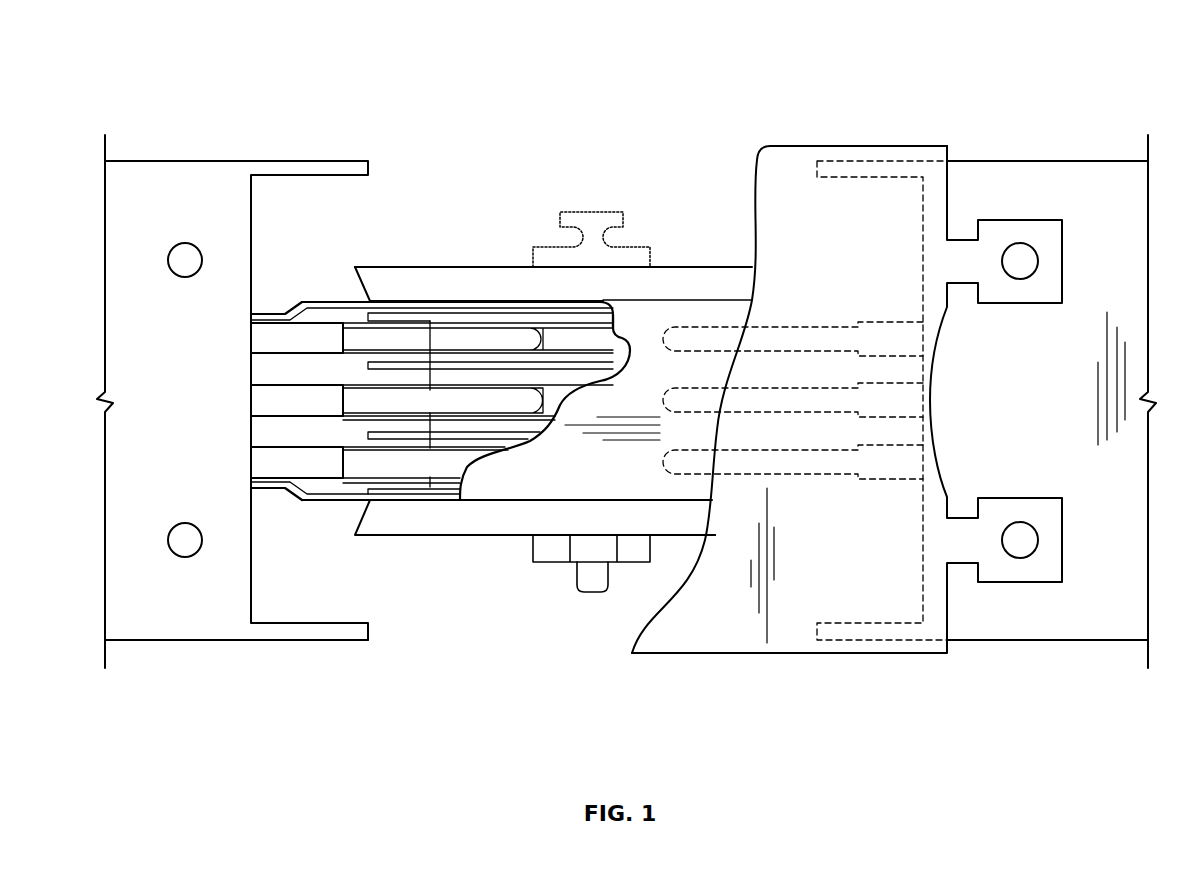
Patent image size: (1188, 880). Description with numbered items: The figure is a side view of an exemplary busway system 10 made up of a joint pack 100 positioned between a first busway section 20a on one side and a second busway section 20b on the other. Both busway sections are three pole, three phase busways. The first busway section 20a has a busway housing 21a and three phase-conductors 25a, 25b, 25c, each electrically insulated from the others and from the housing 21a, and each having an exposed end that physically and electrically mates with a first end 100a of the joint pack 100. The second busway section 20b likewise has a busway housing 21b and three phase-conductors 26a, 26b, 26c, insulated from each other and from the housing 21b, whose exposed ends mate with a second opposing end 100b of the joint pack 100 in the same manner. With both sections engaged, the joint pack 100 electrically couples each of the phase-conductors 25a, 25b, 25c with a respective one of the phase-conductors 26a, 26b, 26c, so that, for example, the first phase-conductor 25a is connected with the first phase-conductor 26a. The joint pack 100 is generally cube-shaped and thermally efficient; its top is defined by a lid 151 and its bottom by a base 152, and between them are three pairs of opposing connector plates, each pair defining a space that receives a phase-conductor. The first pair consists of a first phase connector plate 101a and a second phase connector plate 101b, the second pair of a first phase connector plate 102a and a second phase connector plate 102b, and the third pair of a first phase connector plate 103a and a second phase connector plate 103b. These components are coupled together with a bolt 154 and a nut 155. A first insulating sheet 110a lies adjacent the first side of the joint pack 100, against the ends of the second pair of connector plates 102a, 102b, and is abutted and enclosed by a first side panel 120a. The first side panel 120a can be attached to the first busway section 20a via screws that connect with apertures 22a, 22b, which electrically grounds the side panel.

The busway system 10 is at (410, 54).
The first busway section 20a is at (197, 140).
The second busway section 20b is at (1032, 140).
The busway housing 21a is at (178, 630).
The busway housing 21b is at (1050, 636).
The aperture 22a is at (170, 262).
The aperture 22b is at (170, 541).
The first phase-conductor 25a is at (362, 338).
The phase-conductor 25b is at (357, 400).
The phase-conductor 25c is at (352, 467).
The first phase-conductor 26a is at (783, 327).
The phase-conductor 26b is at (746, 412).
The phase-conductor 26c is at (793, 480).
The joint pack 100 is at (637, 159).
The first end 100a is at (349, 250).
The second opposing end 100b is at (680, 545).
The first phase connector plate 101a is at (458, 323).
The second phase connector plate 101b is at (632, 353).
The first phase connector plate 102a is at (450, 379).
The second phase connector plate 102b is at (450, 418).
The first phase connector plate 103a is at (447, 447).
The second phase connector plate 103b is at (437, 480).
The first insulating sheet 110a is at (638, 485).
The first side panel 120a is at (883, 231).
The lid 151 is at (387, 277).
The base 152 is at (370, 520).
The bolt 154 is at (587, 578).
The nut 155 is at (547, 552).